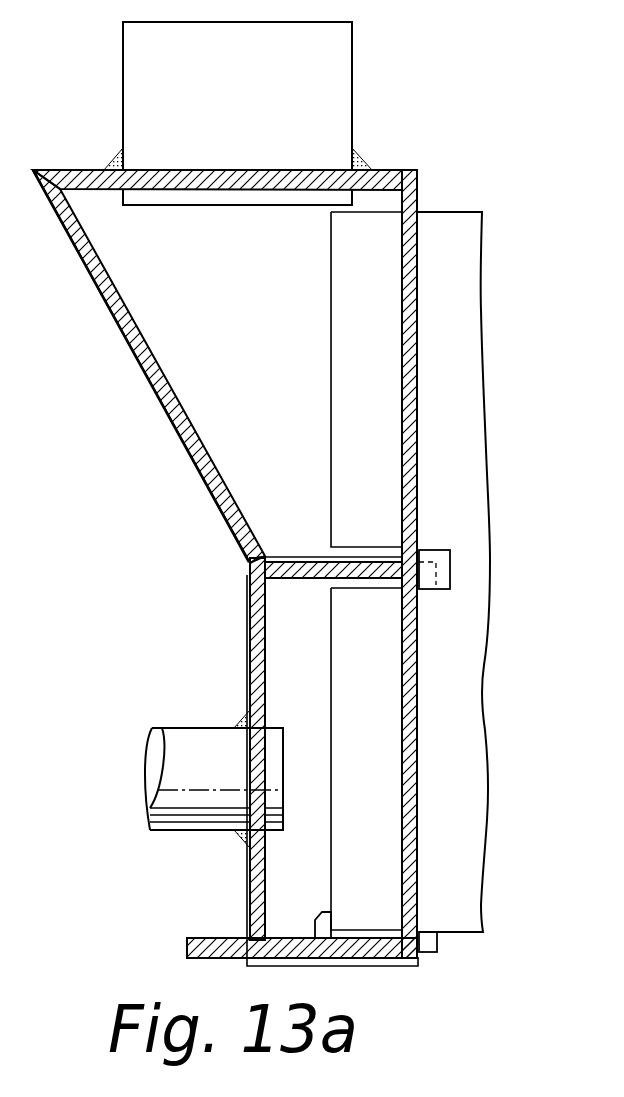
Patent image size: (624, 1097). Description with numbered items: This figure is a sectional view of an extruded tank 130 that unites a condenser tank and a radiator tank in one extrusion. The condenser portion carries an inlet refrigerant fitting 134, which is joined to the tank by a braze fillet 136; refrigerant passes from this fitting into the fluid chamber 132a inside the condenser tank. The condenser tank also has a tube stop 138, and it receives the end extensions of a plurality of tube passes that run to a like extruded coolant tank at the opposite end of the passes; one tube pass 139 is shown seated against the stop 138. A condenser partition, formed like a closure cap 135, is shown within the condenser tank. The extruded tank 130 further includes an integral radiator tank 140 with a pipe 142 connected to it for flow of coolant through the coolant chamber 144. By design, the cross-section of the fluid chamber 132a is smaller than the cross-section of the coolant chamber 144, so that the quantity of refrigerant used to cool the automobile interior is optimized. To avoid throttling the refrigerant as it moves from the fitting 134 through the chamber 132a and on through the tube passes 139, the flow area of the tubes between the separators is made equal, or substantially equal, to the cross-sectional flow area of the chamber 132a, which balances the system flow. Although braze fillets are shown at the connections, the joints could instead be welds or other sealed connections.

The extruded tank 130 is at (421, 411).
The fluid chamber 132a is at (358, 650).
The inlet refrigerant fitting 134 is at (198, 805).
The closure cap 135 is at (272, 592).
The braze fillet 136 is at (240, 726).
The tube stop 138 is at (318, 917).
The tube pass 139 is at (455, 240).
The integral radiator tank 140 is at (170, 434).
The pipe 142 is at (337, 70).
The coolant chamber 144 is at (218, 328).